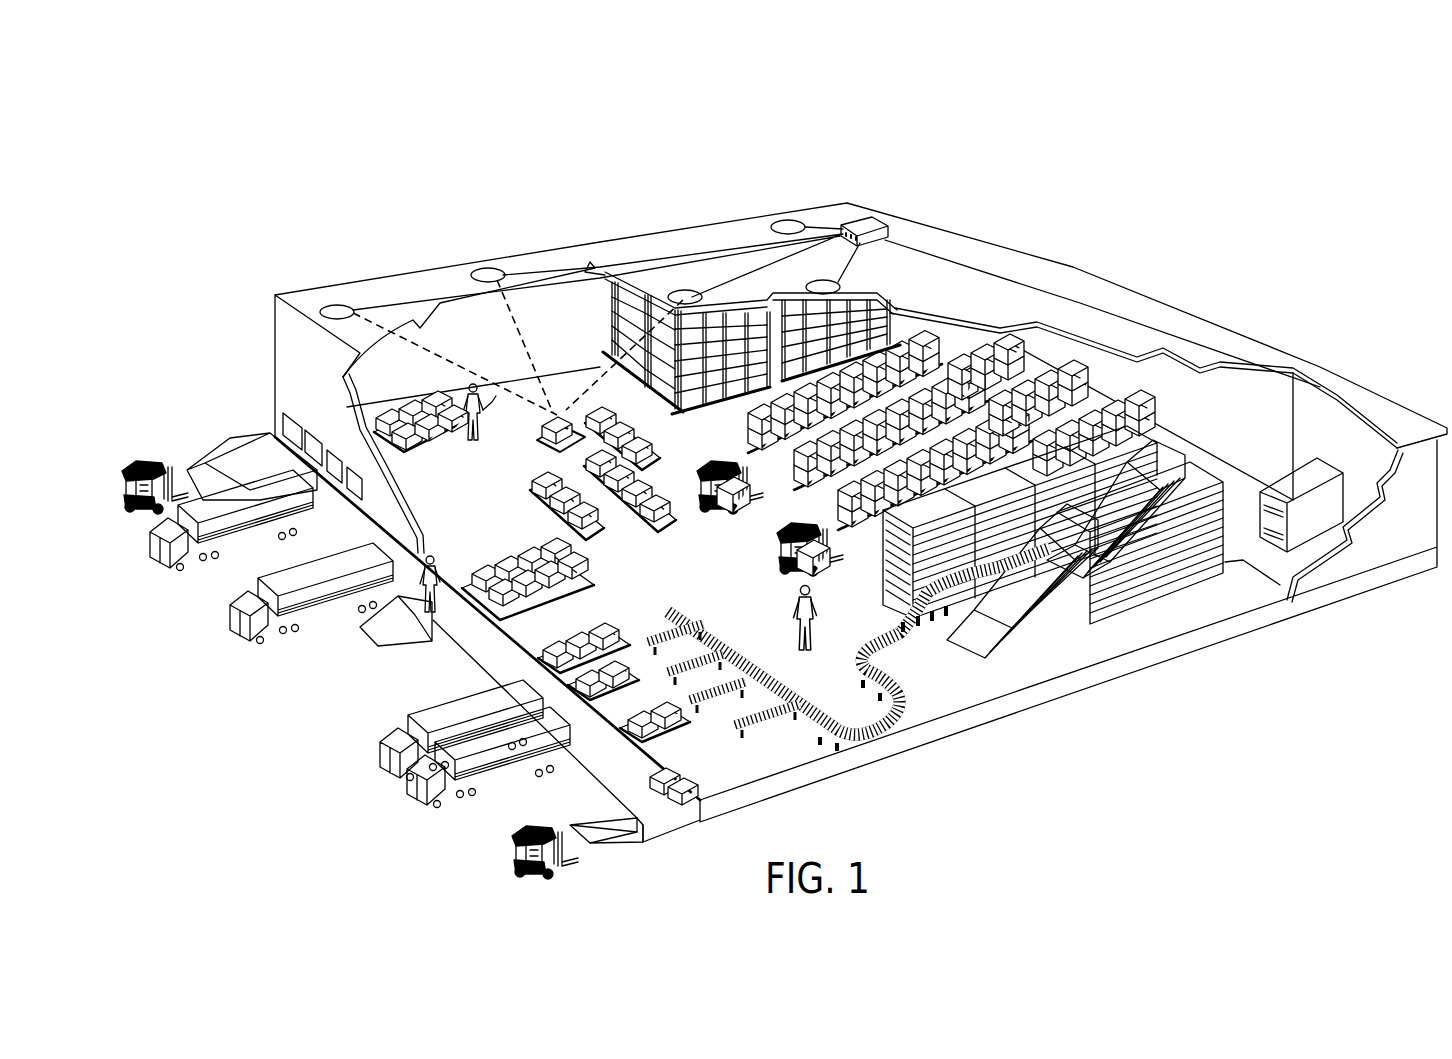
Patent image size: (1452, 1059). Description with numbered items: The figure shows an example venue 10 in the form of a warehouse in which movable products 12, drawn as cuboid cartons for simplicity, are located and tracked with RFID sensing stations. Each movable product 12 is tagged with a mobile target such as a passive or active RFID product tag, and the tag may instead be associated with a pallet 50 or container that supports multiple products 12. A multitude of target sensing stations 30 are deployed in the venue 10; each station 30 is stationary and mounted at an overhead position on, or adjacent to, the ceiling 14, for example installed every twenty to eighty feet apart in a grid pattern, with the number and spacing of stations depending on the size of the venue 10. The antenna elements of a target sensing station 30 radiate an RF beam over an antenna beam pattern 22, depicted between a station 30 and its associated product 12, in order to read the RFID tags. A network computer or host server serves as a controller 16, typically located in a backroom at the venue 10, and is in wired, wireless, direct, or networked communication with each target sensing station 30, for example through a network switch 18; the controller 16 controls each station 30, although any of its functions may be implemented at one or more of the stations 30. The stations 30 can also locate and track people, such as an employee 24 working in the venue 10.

The venue 10 is at (1051, 259).
The movable products 12 is at (550, 443).
The ceiling 14 is at (905, 270).
The controller 16 is at (1330, 457).
The network switch 18 is at (875, 222).
The antenna beam pattern 22 is at (424, 352).
The employee 24 is at (468, 433).
The target sensing station 30 is at (763, 136).
The pallet 50 is at (540, 427).